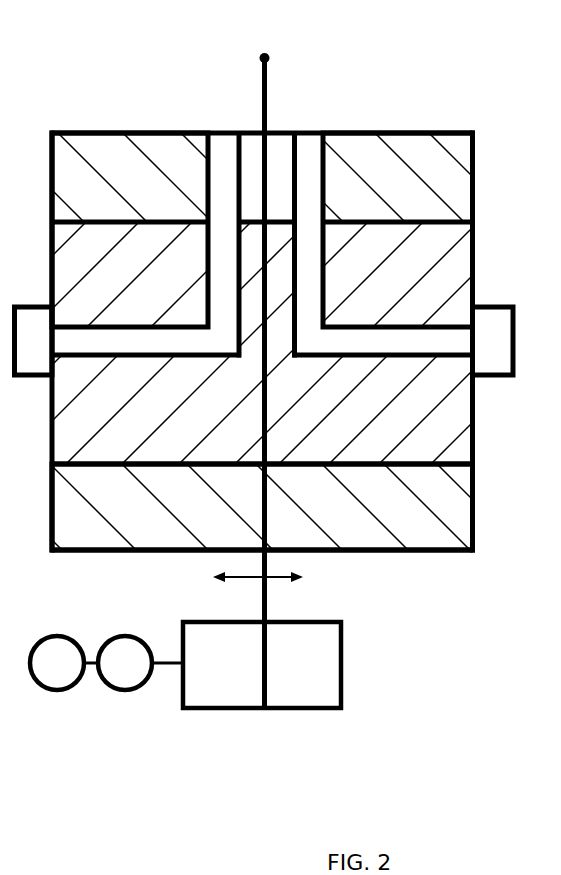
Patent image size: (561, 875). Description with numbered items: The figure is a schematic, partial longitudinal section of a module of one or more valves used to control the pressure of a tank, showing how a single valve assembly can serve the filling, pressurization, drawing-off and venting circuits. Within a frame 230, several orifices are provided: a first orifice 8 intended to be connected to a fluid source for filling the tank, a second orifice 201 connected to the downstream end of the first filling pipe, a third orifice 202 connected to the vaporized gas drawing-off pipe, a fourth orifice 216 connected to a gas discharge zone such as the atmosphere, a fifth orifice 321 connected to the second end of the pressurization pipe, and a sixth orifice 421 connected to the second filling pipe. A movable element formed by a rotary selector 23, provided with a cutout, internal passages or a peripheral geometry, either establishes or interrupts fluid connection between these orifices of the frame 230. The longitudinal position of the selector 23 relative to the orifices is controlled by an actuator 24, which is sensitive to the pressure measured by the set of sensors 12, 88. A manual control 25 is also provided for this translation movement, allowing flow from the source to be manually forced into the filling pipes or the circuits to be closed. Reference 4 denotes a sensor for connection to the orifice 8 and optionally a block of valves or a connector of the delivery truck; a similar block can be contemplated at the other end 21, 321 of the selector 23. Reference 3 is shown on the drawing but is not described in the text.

The manual control 25 is at (270, 74).
The fourth orifice 216 is at (280, 437).
The second orifice 201 is at (280, 437).
The third orifice 202 is at (218, 132).
The sixth orifice 421 is at (309, 131).
The field generating component 3 is at (495, 324).
The sensor 4 is at (492, 362).
The first orifice 8 is at (442, 360).
The pressurization pipe end 21 is at (47, 456).
The fifth orifice 321 is at (47, 353).
The rotary selector 23 is at (280, 437).
The frame 230 is at (412, 533).
The actuator 24 is at (325, 690).
The sensor 12 is at (140, 663).
The sensor 88 is at (64, 663).